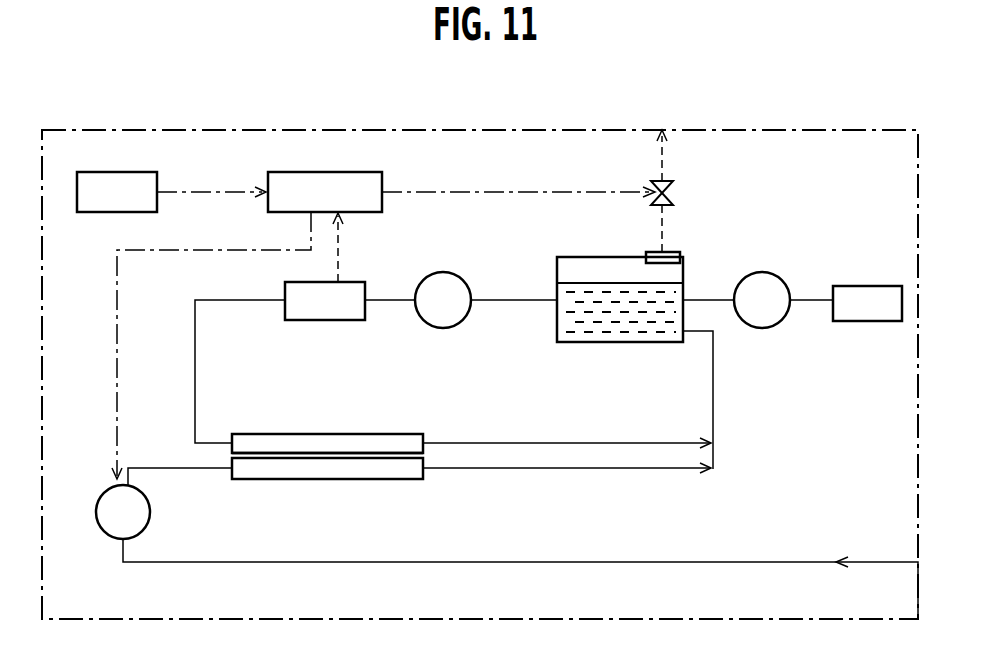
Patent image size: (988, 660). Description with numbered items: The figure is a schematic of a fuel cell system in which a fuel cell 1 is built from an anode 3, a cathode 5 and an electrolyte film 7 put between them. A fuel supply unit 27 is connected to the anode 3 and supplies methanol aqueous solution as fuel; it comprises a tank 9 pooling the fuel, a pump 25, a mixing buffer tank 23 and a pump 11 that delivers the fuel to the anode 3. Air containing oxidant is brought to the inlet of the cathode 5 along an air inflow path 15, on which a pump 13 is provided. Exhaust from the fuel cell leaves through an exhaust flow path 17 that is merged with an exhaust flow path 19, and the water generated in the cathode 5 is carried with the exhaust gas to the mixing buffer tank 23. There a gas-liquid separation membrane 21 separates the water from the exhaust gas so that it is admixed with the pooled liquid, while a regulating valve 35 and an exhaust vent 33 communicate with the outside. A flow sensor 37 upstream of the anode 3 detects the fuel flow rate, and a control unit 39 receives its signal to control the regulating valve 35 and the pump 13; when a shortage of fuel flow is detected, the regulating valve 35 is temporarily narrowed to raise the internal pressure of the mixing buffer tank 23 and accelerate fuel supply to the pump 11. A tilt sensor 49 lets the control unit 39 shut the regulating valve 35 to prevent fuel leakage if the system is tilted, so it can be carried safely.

The fuel cell 1 is at (343, 452).
The anode 3 is at (318, 433).
The cathode 5 is at (282, 480).
The electrolyte film 7 is at (364, 460).
The tank 9 is at (870, 286).
The pump 11 is at (447, 272).
The pump 13 is at (150, 512).
The air inflow path 15 is at (892, 561).
The exhaust flow path 17 is at (685, 441).
The exhaust flow path 19 is at (688, 470).
The gas-liquid separation membrane 21 is at (673, 250).
The mixing buffer tank 23 is at (597, 343).
The pump 25 is at (764, 272).
The fuel supply unit 27 is at (187, 308).
The exhaust vent 33 is at (652, 238).
The regulating valve 35 is at (672, 181).
The flow sensor 37 is at (351, 281).
The control unit 39 is at (363, 173).
The tilt sensor 49 is at (132, 172).